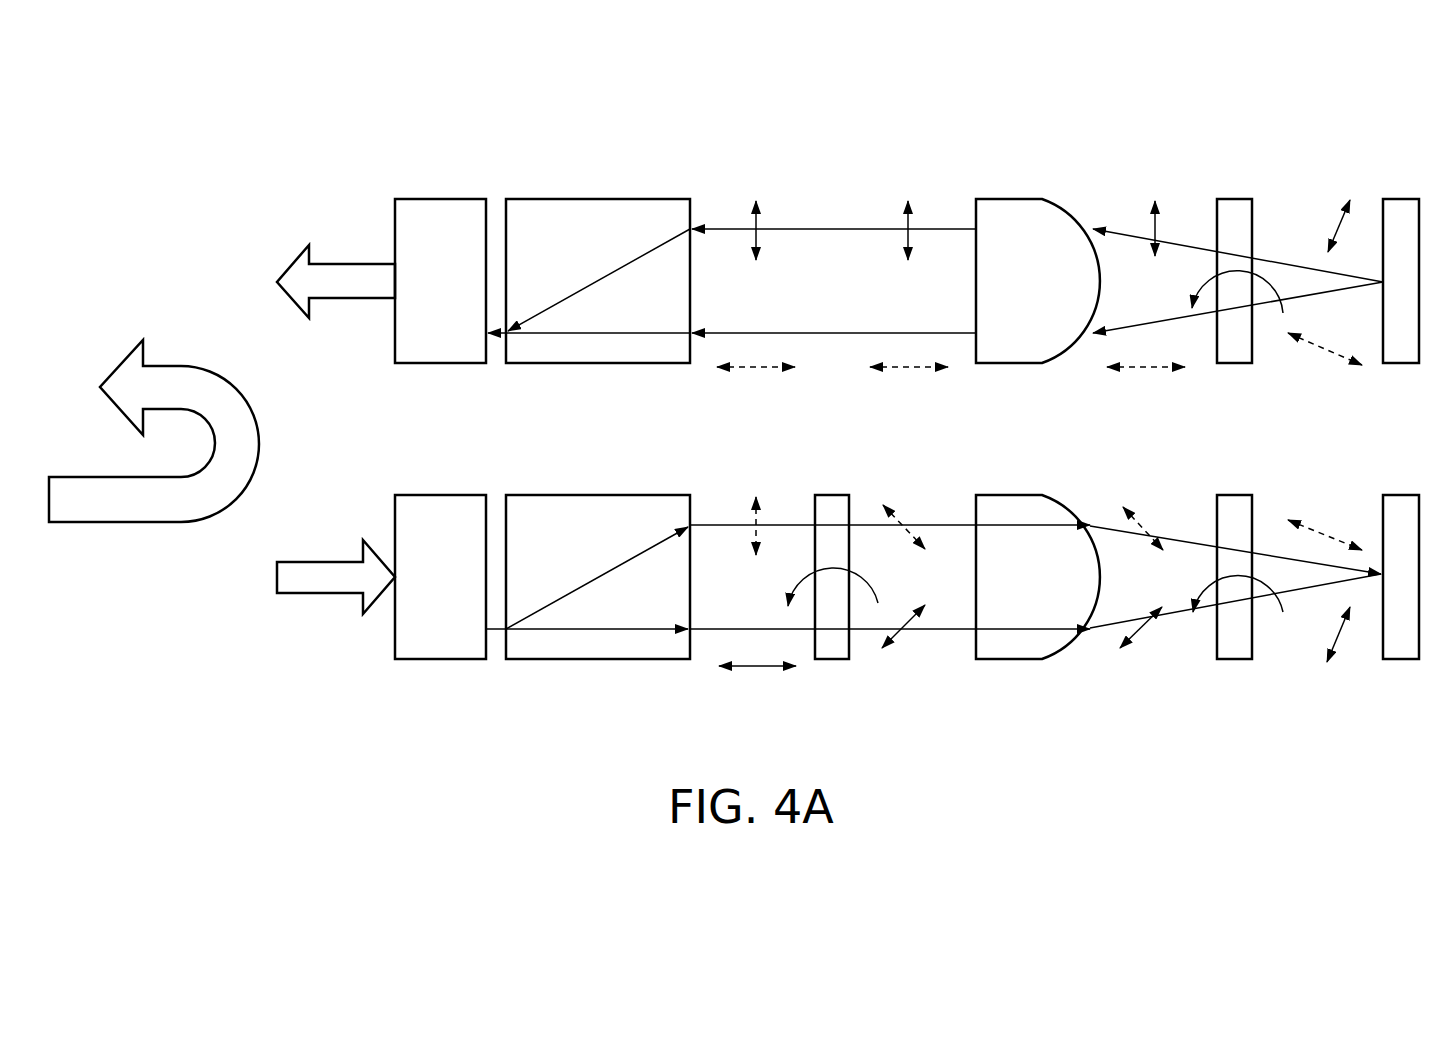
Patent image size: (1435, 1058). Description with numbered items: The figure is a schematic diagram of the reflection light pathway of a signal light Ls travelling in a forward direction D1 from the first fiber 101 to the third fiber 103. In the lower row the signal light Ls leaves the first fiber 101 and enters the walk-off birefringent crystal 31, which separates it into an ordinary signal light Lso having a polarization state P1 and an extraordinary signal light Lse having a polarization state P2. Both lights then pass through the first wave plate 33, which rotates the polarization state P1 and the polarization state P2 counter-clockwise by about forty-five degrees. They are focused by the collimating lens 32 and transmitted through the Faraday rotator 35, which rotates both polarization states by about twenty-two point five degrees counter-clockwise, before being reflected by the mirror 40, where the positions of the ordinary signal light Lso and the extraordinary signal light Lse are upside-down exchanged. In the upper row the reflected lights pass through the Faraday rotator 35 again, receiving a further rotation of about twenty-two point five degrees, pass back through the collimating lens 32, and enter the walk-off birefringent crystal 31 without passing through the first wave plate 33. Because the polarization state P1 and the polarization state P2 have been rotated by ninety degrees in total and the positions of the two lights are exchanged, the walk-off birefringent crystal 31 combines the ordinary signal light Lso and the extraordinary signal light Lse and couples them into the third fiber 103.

The walk-off birefringent crystal 31 is at (548, 198).
The collimating lens 32 is at (1022, 198).
The first wave plate 33 is at (833, 660).
The Faraday rotator 35 is at (1237, 198).
The mirror 40 is at (1403, 198).
The first fiber 101 is at (463, 592).
The third fiber 103 is at (463, 296).
The signal light Ls is at (346, 278).
The extraordinary signal light Lse is at (628, 557).
The ordinary signal light Lso is at (656, 632).
The forward direction D1 is at (129, 510).
The polarization state P1 is at (1034, 431).
The polarization state P2 is at (1039, 437).